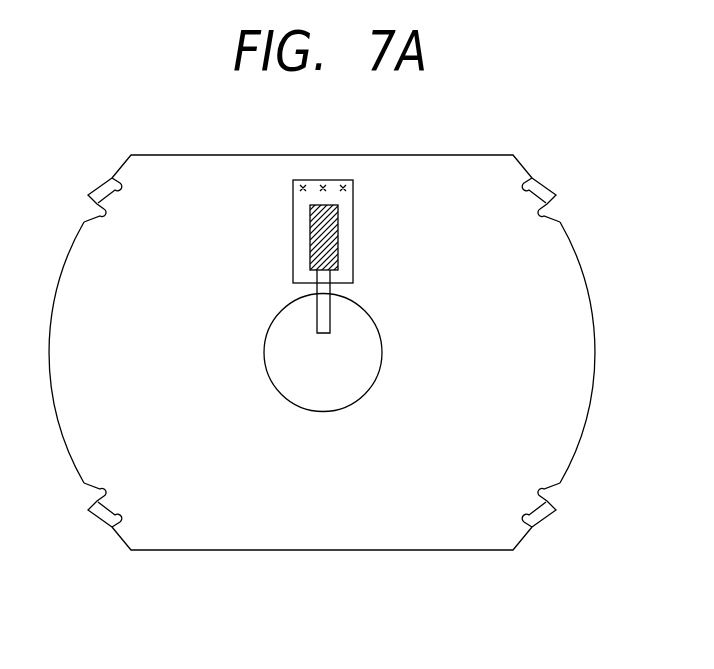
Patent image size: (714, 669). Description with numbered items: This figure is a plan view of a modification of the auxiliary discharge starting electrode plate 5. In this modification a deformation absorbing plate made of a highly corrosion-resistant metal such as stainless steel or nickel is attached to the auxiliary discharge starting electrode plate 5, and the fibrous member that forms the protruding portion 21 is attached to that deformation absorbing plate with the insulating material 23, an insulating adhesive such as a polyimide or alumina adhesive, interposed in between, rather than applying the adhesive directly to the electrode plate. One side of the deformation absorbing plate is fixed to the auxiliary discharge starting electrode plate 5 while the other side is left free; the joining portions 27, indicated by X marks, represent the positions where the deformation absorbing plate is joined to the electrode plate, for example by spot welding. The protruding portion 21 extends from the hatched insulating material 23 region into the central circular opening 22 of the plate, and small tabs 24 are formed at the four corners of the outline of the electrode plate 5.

The auxiliary discharge starting electrode plate 5 is at (573, 304).
The protruding portion 21 is at (326, 318).
The circular opening 22 is at (372, 378).
The insulating material 23 is at (331, 232).
The engaging tab / clip 24 is at (100, 181).
The joining portions 27 is at (323, 179).